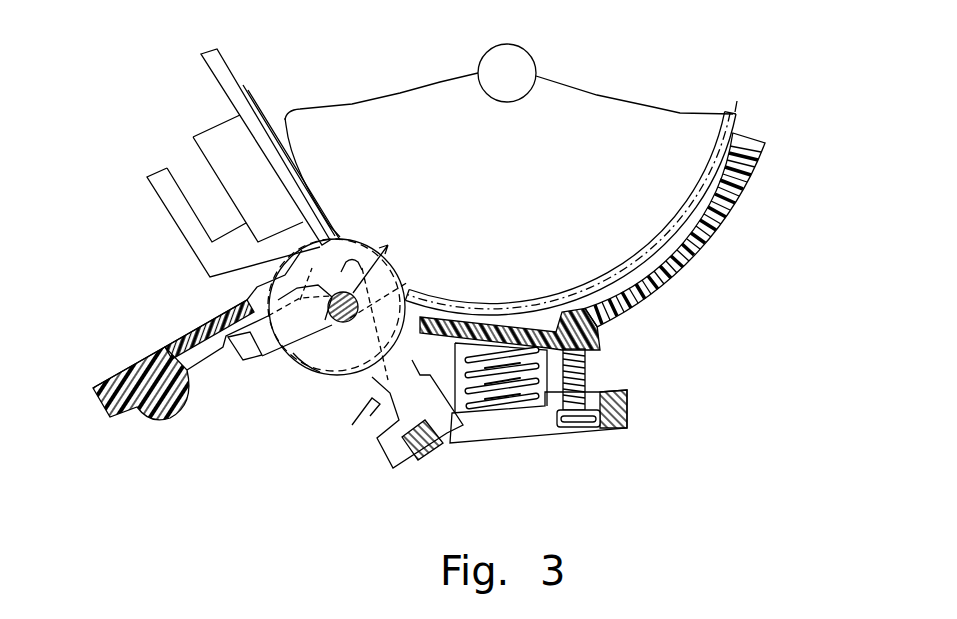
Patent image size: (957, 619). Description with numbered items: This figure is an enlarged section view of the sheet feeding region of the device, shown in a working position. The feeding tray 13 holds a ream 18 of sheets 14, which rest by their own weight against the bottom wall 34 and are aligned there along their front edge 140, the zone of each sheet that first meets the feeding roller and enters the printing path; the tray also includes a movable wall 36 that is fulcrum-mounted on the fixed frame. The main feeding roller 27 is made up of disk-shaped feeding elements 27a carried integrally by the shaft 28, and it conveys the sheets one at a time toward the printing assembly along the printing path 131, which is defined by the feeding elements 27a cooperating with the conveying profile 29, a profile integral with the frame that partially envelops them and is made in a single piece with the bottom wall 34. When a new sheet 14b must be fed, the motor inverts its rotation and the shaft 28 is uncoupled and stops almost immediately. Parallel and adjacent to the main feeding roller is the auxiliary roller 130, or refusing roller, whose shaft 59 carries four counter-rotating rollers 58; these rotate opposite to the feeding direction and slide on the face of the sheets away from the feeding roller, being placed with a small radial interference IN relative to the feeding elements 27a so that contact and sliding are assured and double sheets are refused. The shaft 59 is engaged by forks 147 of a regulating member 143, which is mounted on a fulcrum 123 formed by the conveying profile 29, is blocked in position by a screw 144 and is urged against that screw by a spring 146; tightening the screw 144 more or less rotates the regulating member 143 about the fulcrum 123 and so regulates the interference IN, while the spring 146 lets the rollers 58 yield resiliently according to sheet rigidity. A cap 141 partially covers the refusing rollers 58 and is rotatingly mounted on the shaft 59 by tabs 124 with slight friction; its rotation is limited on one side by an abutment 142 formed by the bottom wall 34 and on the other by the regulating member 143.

The feeding tray 13 is at (120, 155).
The sheets 14 is at (252, 110).
The new sheet 14b is at (273, 122).
The ream 18 is at (205, 61).
The main feeding roller 27 is at (648, 110).
The feeding elements 27a is at (742, 122).
The shaft 28 is at (513, 98).
The conveying profile 29 is at (707, 256).
The bottom wall 34 is at (157, 350).
The movable wall 36 is at (207, 152).
The counter-rotating rollers 58 is at (413, 278).
The shaft 59 is at (345, 323).
The radial interference IN is at (394, 262).
The fulcrum 123 is at (430, 452).
The tabs 124 is at (290, 368).
The auxiliary roller 130 is at (238, 461).
The printing path 131 is at (738, 214).
The front edge 140 is at (332, 229).
The cap 141 is at (262, 352).
The abutment 142 is at (232, 303).
The regulating member 143 is at (393, 470).
The screw 144 is at (587, 382).
The spring 146 is at (498, 402).
The forks 147 is at (440, 268).